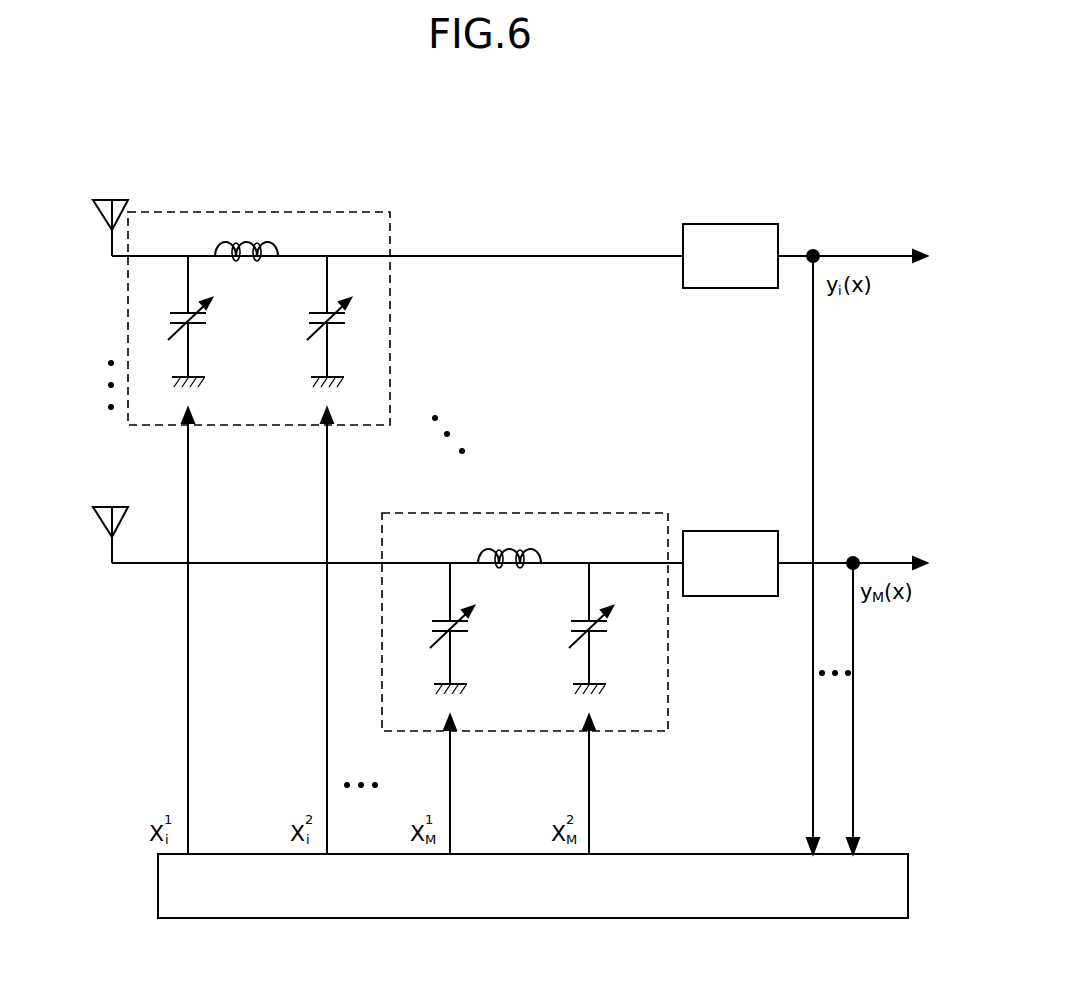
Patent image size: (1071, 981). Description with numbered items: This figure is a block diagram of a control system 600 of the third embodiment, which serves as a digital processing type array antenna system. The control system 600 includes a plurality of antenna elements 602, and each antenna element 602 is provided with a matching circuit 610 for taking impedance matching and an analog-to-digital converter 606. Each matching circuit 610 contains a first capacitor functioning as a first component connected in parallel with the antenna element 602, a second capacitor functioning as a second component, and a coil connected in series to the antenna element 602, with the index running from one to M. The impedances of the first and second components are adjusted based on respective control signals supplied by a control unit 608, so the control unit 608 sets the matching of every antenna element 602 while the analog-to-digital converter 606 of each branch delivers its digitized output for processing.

The control system 600 is at (212, 121).
The antenna element 602 is at (108, 240).
The analog-to-digital converter 606 is at (729, 224).
The control unit 608 is at (720, 853).
The matching circuit 610 is at (355, 210).